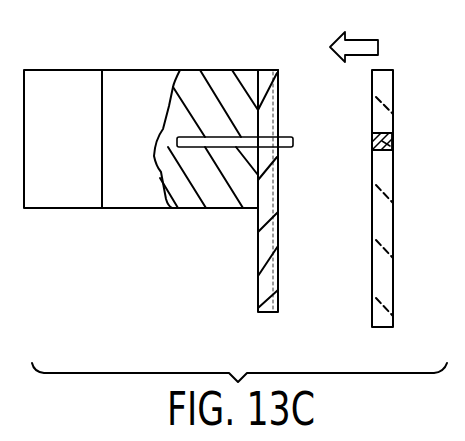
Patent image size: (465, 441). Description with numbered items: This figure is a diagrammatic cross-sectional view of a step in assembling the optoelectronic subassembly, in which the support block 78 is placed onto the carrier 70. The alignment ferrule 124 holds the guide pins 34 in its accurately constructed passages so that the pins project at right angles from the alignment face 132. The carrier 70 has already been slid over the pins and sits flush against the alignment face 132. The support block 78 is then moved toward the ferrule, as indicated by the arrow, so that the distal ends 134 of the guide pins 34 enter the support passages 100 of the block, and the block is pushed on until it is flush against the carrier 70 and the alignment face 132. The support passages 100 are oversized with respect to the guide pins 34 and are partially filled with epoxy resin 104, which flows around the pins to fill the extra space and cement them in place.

The guide pins 34 is at (231, 146).
The carrier 70 is at (279, 223).
The support block 78 is at (372, 278).
The support passages 100 is at (381, 133).
The epoxy resin 104 is at (388, 142).
The alignment ferrule 124 is at (78, 142).
The alignment face 132 is at (268, 70).
The distal ends 134 is at (291, 136).